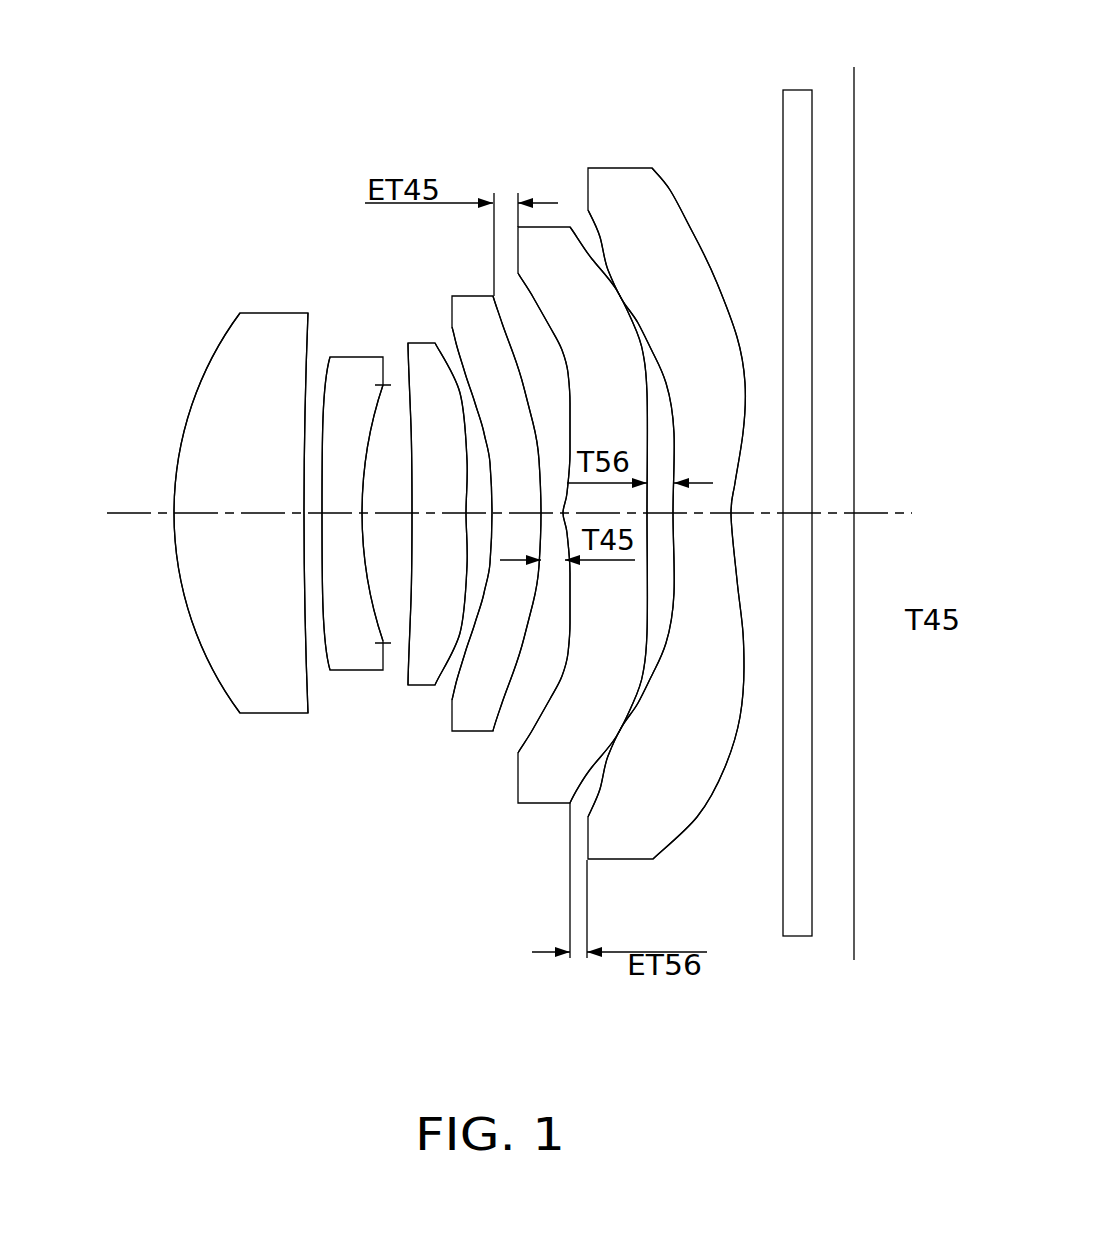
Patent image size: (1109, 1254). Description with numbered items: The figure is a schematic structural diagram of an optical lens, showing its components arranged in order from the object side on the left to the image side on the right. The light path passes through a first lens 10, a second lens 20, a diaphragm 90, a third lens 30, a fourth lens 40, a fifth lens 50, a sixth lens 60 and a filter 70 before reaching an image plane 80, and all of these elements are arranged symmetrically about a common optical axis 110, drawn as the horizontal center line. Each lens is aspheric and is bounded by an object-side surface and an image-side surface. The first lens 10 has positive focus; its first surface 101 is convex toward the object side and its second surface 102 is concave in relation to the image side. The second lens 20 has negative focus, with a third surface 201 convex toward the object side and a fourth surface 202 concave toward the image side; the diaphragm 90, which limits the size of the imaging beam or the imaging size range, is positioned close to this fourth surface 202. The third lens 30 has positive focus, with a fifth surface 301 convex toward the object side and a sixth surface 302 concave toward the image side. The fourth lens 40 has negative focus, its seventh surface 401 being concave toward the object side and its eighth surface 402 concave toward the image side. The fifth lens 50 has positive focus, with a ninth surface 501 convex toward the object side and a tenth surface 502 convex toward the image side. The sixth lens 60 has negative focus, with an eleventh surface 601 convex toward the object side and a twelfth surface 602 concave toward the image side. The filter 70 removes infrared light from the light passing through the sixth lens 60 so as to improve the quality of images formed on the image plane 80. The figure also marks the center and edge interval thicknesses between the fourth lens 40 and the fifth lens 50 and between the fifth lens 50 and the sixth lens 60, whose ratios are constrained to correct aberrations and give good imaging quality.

The first lens 10 is at (233, 378).
The first surface 101 is at (188, 417).
The second surface 102 is at (304, 483).
The second lens 20 is at (360, 377).
The third surface 201 is at (321, 403).
The fourth surface 202 is at (362, 540).
The third lens 30 is at (422, 357).
The fifth surface 301 is at (410, 582).
The sixth surface 302 is at (455, 638).
The fourth lens 40 is at (462, 312).
The seventh surface 401 is at (465, 670).
The eighth surface 402 is at (510, 687).
The fifth lens 50 is at (585, 255).
The ninth surface 501 is at (530, 740).
The tenth surface 502 is at (641, 673).
The sixth lens 60 is at (628, 188).
The eleventh surface 601 is at (658, 668).
The twelfth surface 602 is at (747, 677).
The filter 70 is at (798, 114).
The image plane 80 is at (855, 105).
The diaphragm 90 is at (385, 643).
The optical axis 110 is at (877, 497).